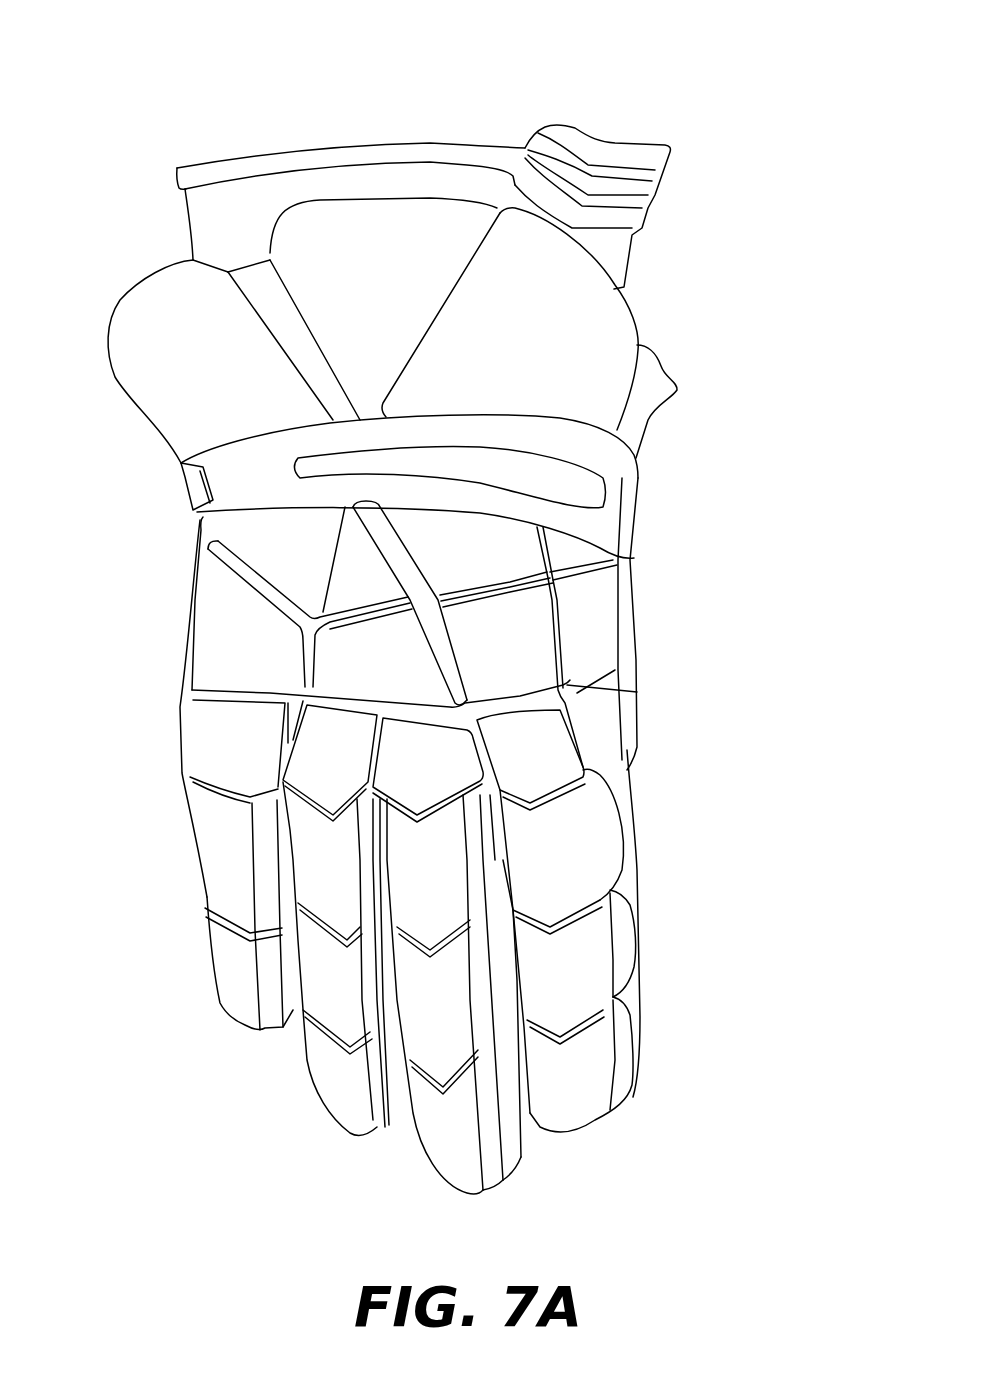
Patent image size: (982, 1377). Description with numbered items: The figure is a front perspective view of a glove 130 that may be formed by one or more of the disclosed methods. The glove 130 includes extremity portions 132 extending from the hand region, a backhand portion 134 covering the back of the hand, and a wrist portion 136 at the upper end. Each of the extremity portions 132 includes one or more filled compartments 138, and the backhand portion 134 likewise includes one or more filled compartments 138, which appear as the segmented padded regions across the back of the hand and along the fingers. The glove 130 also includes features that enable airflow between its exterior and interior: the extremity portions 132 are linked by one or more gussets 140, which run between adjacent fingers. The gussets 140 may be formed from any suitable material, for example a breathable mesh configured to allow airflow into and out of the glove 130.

The glove 130 is at (438, 623).
The extremity portions 132 is at (578, 1136).
The backhand portion 134 is at (644, 616).
The wrist portion 136 is at (687, 392).
The filled compartments 138 is at (220, 613).
The gussets 140 is at (403, 1112).